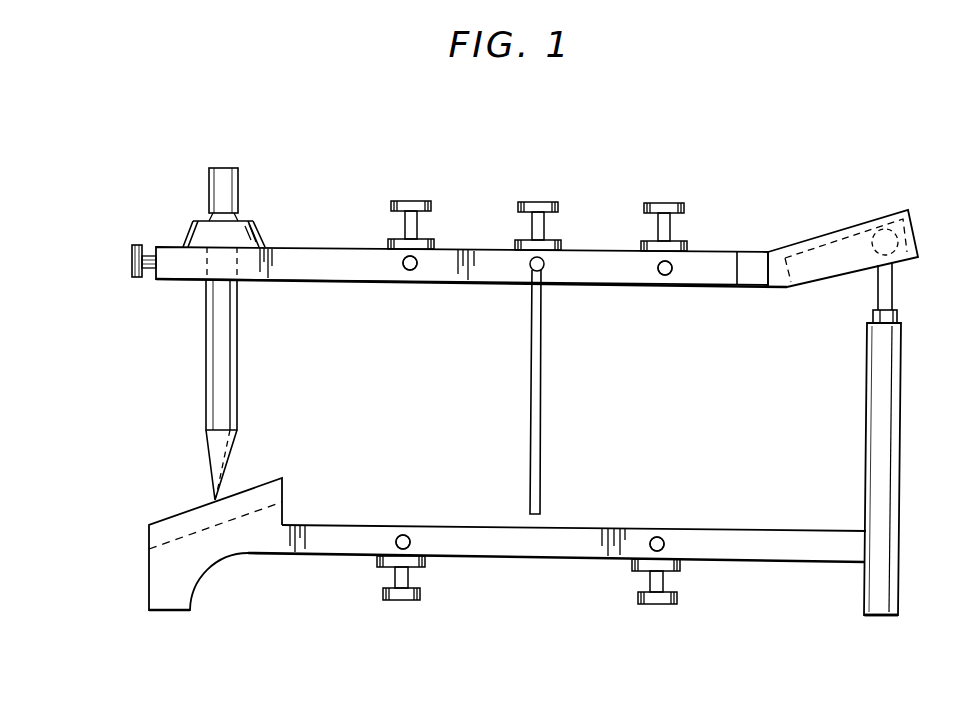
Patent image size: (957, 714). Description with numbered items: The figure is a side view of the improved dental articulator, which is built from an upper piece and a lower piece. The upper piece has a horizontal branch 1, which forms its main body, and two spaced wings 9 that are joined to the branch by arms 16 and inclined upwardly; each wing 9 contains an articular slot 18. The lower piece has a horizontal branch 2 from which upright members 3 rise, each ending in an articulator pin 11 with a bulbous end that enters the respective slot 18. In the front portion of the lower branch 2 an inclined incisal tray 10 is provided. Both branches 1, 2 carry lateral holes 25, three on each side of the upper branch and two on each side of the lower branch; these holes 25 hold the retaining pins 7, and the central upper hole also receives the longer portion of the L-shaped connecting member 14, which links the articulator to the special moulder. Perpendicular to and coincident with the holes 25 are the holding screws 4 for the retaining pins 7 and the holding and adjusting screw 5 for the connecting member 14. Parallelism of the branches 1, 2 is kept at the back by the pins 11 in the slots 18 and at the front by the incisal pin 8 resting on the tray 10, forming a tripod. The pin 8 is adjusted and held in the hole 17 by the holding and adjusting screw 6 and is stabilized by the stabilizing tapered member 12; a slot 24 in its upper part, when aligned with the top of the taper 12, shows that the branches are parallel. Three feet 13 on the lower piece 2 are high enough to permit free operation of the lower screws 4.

The horizontal branch 1 is at (339, 248).
The horizontal branch 2 is at (305, 525).
The upright member 3 is at (902, 405).
The holding screw 4 is at (417, 201).
The holding and adjusting screw 5 is at (549, 202).
The holding and adjusting screw 6 is at (132, 262).
The retaining pin 7 is at (410, 270).
The incisal pin 8 is at (226, 373).
The wing 9 is at (843, 265).
The incisal tray 10 is at (167, 521).
The articulator pin 11 is at (892, 290).
The stabilizing tapered member 12 is at (193, 229).
The foot 13 is at (191, 605).
The connecting member 14 is at (542, 397).
The arm 16 is at (752, 263).
The hole 17 is at (237, 296).
The articular slot 18 is at (815, 270).
The slot 24 is at (237, 215).
The lateral hole 25 is at (416, 262).